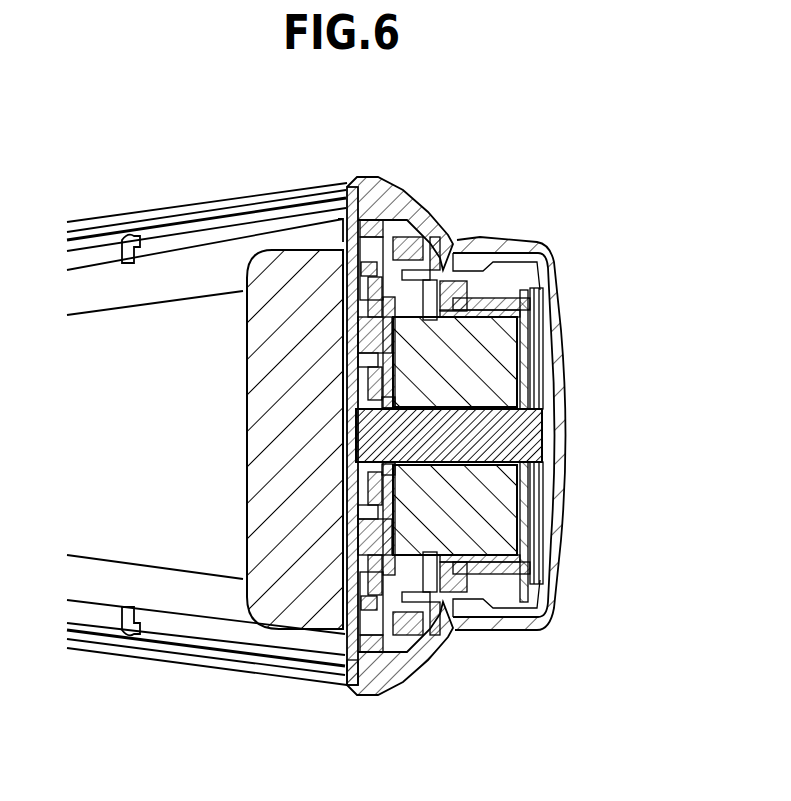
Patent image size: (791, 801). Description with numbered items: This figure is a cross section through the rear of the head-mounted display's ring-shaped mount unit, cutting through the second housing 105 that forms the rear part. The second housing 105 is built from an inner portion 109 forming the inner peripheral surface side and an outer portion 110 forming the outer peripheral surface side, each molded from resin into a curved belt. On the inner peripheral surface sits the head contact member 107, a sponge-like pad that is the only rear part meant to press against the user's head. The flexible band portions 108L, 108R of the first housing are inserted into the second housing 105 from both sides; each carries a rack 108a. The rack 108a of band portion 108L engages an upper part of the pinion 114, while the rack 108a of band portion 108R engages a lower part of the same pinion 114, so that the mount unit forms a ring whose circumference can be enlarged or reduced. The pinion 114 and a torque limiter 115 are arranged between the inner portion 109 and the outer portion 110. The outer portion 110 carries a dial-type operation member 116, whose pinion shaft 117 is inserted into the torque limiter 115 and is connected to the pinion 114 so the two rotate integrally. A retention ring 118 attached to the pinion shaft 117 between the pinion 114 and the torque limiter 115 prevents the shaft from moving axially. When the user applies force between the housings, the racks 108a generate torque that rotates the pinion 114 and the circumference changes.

The second housing 105 is at (173, 668).
The head contact member 107 is at (247, 466).
The band portion 108L is at (373, 250).
The band portion 108R is at (370, 598).
The rack 108a is at (345, 290).
The inner portion 109 is at (345, 658).
The outer portion 110 is at (410, 200).
The pinion 114 is at (350, 373).
The torque limiter 115 is at (487, 336).
The operation member 116 is at (547, 622).
The pinion shaft 117 is at (518, 428).
The ring 118 is at (487, 504).